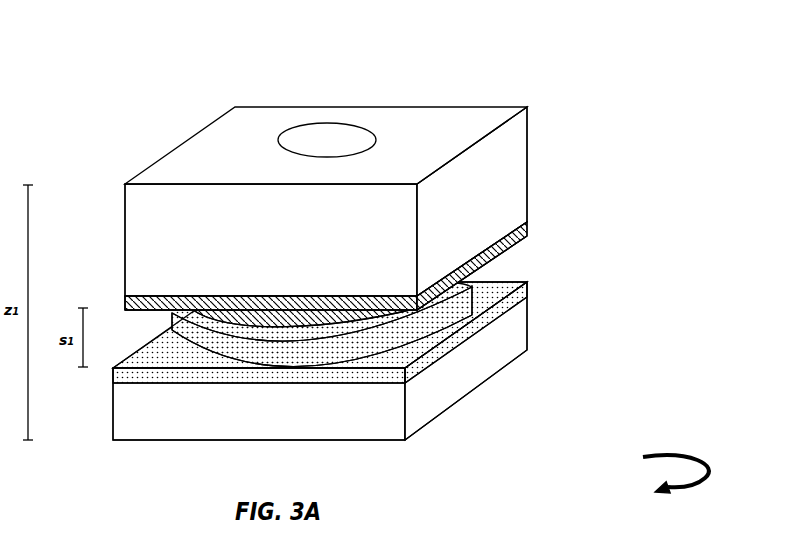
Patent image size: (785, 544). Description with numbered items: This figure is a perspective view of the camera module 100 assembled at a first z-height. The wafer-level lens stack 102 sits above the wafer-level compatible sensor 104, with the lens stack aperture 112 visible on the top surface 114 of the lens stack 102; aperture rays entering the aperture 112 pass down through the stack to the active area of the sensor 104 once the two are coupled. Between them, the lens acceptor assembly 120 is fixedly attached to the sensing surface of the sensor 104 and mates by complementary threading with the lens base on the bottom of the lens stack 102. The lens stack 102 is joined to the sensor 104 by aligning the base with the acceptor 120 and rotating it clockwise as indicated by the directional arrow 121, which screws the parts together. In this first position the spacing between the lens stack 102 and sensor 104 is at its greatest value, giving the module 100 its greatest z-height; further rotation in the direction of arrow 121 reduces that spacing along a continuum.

The camera module 100 is at (329, 228).
The wafer-level lens stack 102 is at (326, 178).
The wafer-level compatible sensor 104 is at (174, 418).
The lens stack aperture 112 is at (328, 124).
The top surface 114 is at (460, 126).
The lens acceptor assembly 120 is at (517, 281).
The directional arrow 121 is at (698, 460).